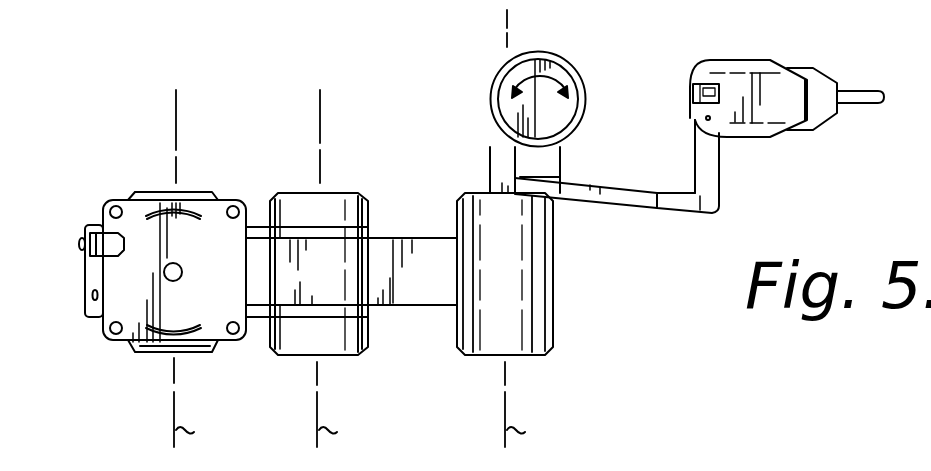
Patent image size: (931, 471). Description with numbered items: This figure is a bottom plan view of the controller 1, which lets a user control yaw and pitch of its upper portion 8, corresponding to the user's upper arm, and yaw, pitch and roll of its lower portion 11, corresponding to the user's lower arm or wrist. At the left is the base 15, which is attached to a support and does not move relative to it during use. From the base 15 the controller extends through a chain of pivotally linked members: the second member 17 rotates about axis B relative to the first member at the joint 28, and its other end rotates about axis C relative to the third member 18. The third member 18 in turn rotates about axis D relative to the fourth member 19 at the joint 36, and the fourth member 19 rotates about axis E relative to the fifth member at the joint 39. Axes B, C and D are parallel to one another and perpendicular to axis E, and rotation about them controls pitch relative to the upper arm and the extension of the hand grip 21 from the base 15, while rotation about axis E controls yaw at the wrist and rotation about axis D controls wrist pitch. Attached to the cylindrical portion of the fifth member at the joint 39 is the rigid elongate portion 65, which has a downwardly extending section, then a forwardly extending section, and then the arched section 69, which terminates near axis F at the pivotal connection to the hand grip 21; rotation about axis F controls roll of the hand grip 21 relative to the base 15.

The controller 1 is at (143, 389).
The upper portion 8 is at (290, 192).
The lower portion 11 is at (604, 200).
The base 15 is at (128, 210).
The second member 17 is at (250, 338).
The third member 18 is at (405, 292).
The fourth member 19 is at (496, 136).
The hand grip 21 is at (790, 134).
The joint 28 is at (338, 185).
The joint 36 is at (518, 362).
The joint 39 is at (578, 62).
The elongate portion 65 is at (616, 186).
The arched section 69 is at (722, 168).